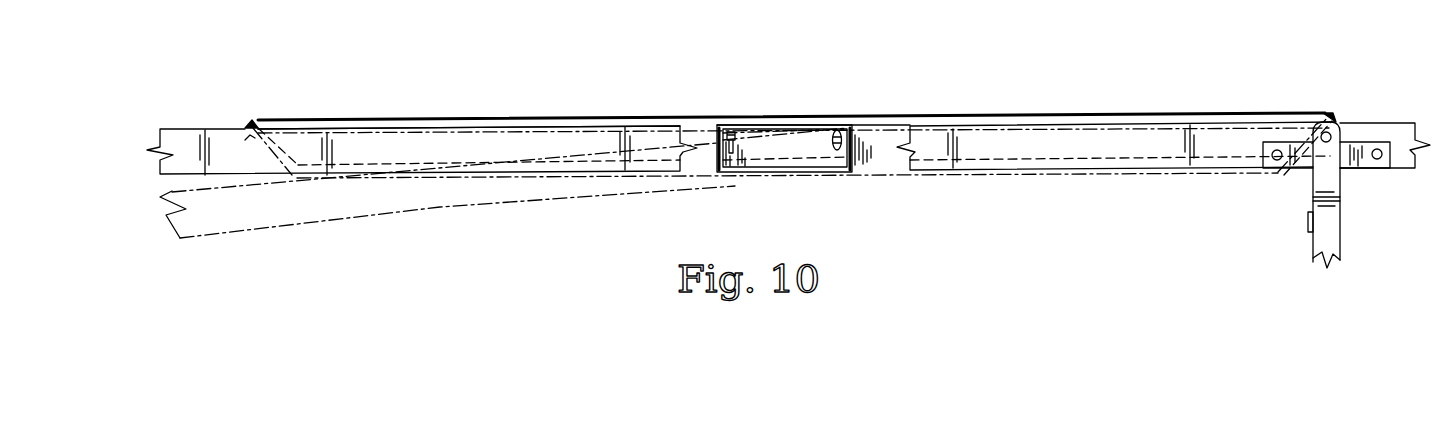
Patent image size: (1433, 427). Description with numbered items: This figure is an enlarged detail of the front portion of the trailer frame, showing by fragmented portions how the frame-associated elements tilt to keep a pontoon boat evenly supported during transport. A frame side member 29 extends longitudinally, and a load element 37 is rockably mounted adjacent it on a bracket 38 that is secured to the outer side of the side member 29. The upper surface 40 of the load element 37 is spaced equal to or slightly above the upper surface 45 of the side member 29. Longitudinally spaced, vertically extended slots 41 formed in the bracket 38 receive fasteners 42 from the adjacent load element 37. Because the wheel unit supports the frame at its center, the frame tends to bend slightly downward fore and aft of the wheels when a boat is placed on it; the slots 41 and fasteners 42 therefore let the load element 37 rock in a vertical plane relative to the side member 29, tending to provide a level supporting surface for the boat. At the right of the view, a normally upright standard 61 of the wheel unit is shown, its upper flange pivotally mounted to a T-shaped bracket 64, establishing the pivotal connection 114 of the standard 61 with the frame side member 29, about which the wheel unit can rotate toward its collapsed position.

The side member 29 is at (185, 132).
The load element 37 is at (380, 138).
The bracket 38 is at (758, 140).
The upper surface 40 is at (437, 118).
The slot 41 is at (729, 130).
The fastener 42 is at (740, 144).
The upper surface 45 is at (229, 128).
The standard 61 is at (1318, 232).
The T-shaped bracket 64 is at (1362, 125).
The pivotal connection 114 is at (1342, 123).